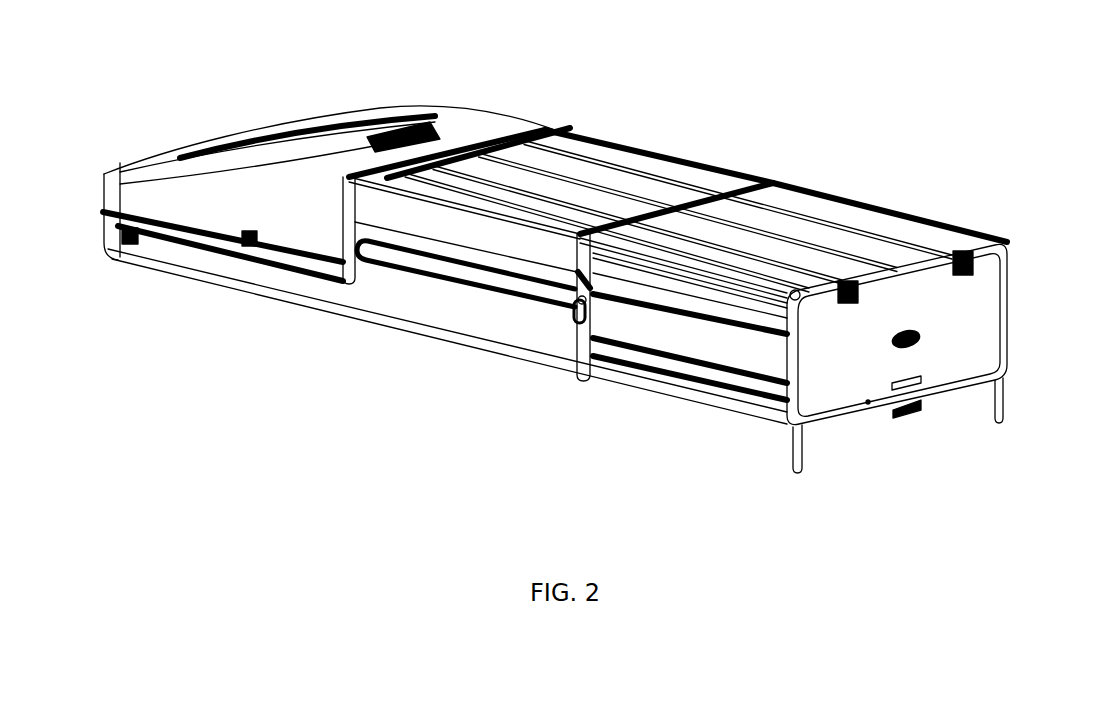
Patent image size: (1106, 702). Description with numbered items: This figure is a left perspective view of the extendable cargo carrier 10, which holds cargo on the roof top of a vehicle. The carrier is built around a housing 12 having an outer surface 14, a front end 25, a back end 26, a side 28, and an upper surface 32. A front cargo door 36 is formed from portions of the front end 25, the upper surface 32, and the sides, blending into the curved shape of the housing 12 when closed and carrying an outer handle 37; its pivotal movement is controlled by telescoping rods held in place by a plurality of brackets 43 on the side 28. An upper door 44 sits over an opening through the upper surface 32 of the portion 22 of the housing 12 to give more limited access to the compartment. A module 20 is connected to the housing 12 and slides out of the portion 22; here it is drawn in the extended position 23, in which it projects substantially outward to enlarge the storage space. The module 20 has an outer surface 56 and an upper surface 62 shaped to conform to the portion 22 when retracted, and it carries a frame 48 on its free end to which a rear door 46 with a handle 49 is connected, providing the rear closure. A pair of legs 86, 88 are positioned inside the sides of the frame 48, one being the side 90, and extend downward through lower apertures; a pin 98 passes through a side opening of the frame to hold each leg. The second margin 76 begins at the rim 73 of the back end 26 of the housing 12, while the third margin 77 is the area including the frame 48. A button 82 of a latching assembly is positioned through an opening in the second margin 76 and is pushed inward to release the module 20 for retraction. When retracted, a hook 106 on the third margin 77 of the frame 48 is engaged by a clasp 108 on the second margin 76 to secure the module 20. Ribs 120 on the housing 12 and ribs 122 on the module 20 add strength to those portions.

The cargo carrier 10 is at (631, 63).
The housing 12 is at (570, 130).
The outer surface 14 is at (367, 293).
The module 20 is at (827, 197).
The portion 22 is at (518, 340).
The extended position 23 is at (287, 386).
The front end 25 is at (103, 173).
The back end 26 is at (583, 353).
The side 28 is at (440, 317).
The upper surface 32 is at (757, 182).
The front cargo door 36 is at (350, 108).
The outer handle 37 is at (410, 135).
The brackets 43 is at (253, 233).
The upper door 44 is at (630, 163).
The rear door 46 is at (985, 318).
The frame 48 is at (1000, 243).
The handle 49 is at (908, 413).
The outer surface 56 is at (867, 217).
The upper surface 62 is at (920, 233).
The rim 73 is at (593, 247).
The second margin 76 is at (683, 222).
The third margin 77 is at (793, 368).
The button 82 is at (572, 310).
The leg 86 is at (790, 457).
The leg 88 is at (992, 418).
The side 90 is at (793, 386).
The pin 98 is at (802, 400).
The hook 106 is at (808, 332).
The clasp 108 is at (597, 300).
The ribs 120 is at (457, 282).
The ribs 122 is at (670, 363).